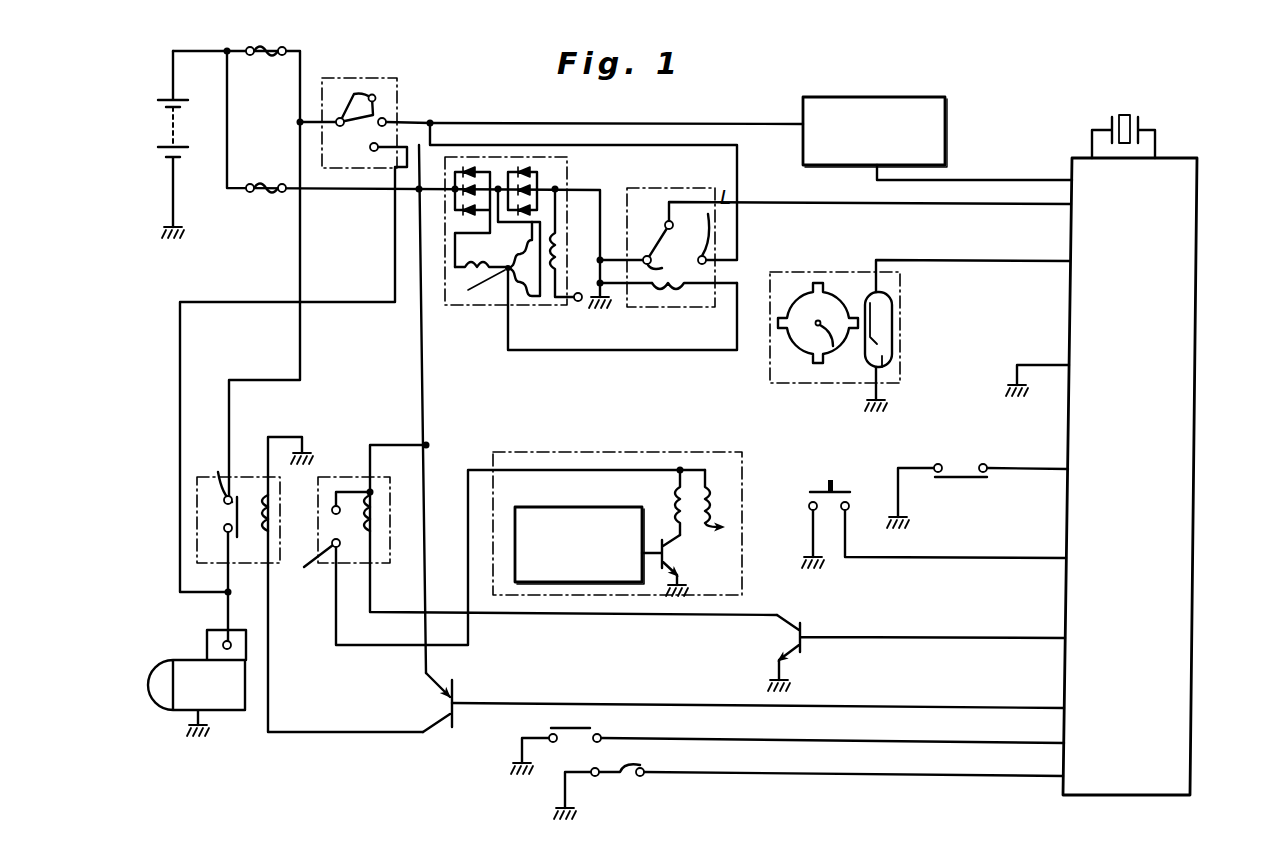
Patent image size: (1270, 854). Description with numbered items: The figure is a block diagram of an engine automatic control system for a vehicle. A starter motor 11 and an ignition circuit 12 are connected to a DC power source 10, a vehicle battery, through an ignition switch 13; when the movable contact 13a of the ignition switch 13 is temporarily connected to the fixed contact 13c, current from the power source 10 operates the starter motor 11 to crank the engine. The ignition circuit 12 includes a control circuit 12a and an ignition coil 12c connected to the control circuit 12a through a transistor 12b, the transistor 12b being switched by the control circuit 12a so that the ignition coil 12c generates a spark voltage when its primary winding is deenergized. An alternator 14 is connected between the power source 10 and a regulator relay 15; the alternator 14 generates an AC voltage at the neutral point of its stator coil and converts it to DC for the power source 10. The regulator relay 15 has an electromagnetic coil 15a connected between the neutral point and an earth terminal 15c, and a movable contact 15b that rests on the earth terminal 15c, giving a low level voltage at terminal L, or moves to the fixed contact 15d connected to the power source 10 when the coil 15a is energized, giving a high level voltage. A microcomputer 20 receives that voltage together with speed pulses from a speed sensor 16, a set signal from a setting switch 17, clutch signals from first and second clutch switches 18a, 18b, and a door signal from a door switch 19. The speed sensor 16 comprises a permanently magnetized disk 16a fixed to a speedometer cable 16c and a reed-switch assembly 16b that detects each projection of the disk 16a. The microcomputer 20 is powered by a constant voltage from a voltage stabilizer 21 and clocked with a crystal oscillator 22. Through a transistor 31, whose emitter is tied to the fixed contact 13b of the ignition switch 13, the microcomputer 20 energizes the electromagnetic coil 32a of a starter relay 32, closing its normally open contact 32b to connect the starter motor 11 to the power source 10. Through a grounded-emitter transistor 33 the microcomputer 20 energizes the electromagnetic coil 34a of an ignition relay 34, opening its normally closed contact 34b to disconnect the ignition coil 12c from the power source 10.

The electric DC power source 10 is at (170, 124).
The starter motor 11 is at (222, 702).
The ignition circuit 12 is at (618, 509).
The control circuit 12a is at (555, 506).
The transistor 12b is at (680, 553).
The ignition coil 12c is at (694, 470).
The ignition switch 13 is at (557, 107).
The movable contact 13a is at (354, 92).
The fixed contact 13b is at (388, 121).
The fixed contact 13c is at (370, 146).
The alternator 14 is at (486, 311).
The regulator relay 15 is at (849, 248).
The electromagnetic coil 15a is at (671, 297).
The movable contact 15b is at (660, 243).
The earth terminal 15c is at (675, 273).
The fixed contact 15d is at (696, 237).
The speed sensor 16 is at (890, 314).
The disk 16a is at (805, 340).
The reed-switch assembly 16b is at (880, 337).
The speedometer cable 16c is at (834, 348).
The setting switch 17 is at (834, 490).
The first clutch switch 18a is at (598, 731).
The second clutch switch 18b is at (637, 767).
The door switch 19 is at (958, 474).
The microcomputer 20 is at (1199, 241).
The voltage stabilizer 21 is at (917, 97).
The crystal oscillator 22 is at (1136, 115).
The transistor 31 is at (458, 702).
The starter relay 32 is at (211, 506).
The electromagnetic coil 32a is at (264, 496).
The normally open contact 32b is at (210, 493).
The transistor 33 is at (806, 632).
The ignition relay 34 is at (354, 523).
The electromagnetic coil 34a is at (374, 544).
The normally closed contact 34b is at (311, 551).